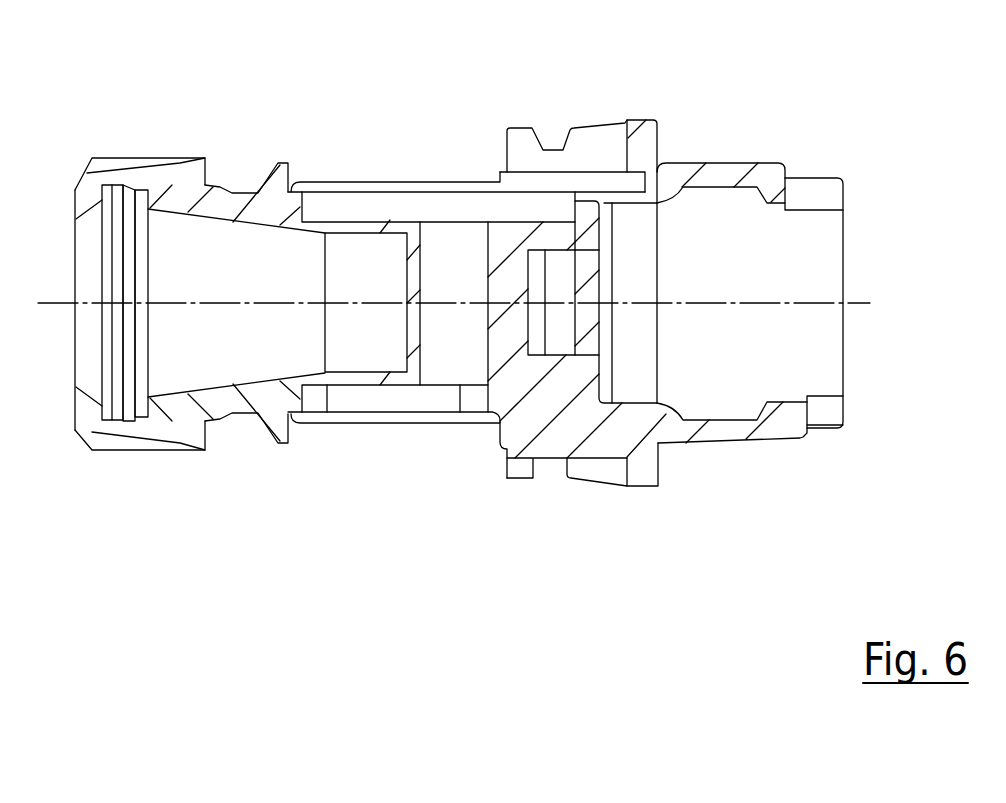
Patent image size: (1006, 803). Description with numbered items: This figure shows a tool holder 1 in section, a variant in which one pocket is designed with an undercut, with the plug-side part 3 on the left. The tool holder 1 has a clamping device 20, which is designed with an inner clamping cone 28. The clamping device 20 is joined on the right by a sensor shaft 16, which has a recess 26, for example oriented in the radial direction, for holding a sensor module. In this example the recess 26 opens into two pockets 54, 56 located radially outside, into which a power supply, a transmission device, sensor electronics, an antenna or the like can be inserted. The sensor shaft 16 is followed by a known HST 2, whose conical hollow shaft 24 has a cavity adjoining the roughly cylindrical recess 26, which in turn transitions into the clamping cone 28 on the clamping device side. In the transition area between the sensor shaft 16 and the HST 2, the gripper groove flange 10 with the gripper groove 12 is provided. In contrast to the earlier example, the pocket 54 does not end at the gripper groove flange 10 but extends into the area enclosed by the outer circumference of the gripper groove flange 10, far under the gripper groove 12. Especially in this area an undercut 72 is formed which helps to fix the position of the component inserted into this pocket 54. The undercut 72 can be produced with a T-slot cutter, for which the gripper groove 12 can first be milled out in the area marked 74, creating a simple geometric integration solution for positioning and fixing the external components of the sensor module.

The tool holder 1 is at (398, 120).
The HST 2 is at (712, 130).
The plug connector part 3 is at (257, 163).
The gripper groove flange 10 is at (640, 468).
The gripper groove 12 is at (543, 462).
The sensor shaft 16 is at (406, 442).
The clamping device 20 is at (153, 467).
The conical hollow shaft 24 is at (735, 428).
The recess 26 is at (467, 368).
The clamping cone 28 is at (253, 368).
The pocket 54 is at (317, 207).
The pocket 56 is at (347, 398).
The undercut 72 is at (547, 190).
The area marked with the reference sign 74 is at (600, 163).